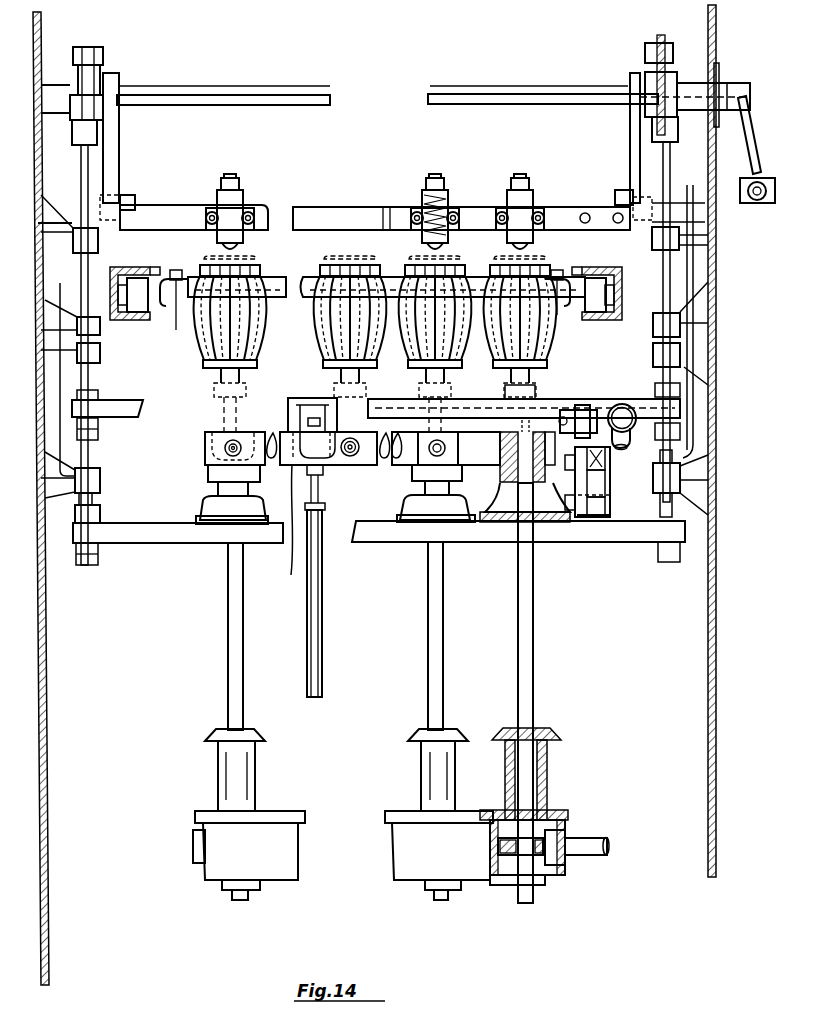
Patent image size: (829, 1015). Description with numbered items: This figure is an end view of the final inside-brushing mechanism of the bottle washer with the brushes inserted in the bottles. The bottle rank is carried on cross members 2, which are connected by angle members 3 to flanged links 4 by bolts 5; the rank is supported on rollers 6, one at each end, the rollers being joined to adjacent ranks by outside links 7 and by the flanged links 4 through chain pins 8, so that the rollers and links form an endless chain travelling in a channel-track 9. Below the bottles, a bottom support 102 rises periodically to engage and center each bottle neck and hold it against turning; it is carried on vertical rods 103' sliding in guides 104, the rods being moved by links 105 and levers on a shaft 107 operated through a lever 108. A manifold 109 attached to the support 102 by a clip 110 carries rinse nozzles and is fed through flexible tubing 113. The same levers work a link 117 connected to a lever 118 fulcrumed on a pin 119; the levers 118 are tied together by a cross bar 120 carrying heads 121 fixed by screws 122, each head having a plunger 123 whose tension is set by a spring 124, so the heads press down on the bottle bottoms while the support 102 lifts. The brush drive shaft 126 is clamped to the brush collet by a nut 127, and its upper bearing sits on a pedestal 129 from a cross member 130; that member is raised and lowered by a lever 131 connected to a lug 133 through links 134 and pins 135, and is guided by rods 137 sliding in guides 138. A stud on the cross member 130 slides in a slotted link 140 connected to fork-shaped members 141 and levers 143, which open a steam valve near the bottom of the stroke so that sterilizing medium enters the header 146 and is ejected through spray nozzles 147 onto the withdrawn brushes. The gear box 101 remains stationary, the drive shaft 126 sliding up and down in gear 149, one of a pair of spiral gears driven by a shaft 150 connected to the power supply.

The link 105 is at (82, 77).
The shaft 107 is at (528, 94).
The lever 108 is at (755, 155).
The link 117 is at (112, 150).
The vertical rod 103' is at (356, 353).
The lever 118 is at (135, 198).
The head 121 is at (218, 206).
The screw 122 is at (250, 205).
The spring 124 is at (425, 210).
The plunger 123 is at (432, 243).
The cross bar 120 is at (328, 207).
The pin 119 is at (615, 200).
The cross member 2 is at (305, 288).
The channel-track 9 is at (122, 267).
The outside link 7 is at (140, 267).
The flanged link 4 is at (166, 278).
The bolt 5 is at (365, 312).
The roller 6 is at (125, 318).
The chain pin 8 is at (140, 312).
The angle member 3 is at (196, 320).
The guide 104 is at (90, 350).
The guide 138 is at (100, 480).
The rod 137 is at (92, 500).
The cross member 130 is at (170, 543).
The lever 143 is at (318, 398).
The fork-shaped member 141 is at (300, 420).
The bottom support 102 is at (386, 399).
The manifold 109 is at (568, 410).
The clip 110 is at (586, 432).
The flexible tubing 113 is at (624, 446).
The header 146 is at (408, 450).
The slotted link 140 is at (318, 620).
The spray nozzle 147 is at (222, 432).
The nut 127 is at (208, 450).
The pedestal 129 is at (487, 542).
The drive shaft 126 is at (533, 690).
The lever 131 is at (590, 462).
The link 134 is at (608, 478).
The lug 133 is at (594, 518).
The pin 135 is at (604, 512).
The gear box 101 is at (432, 770).
The shaft 150 is at (598, 855).
The gear 149 is at (540, 890).